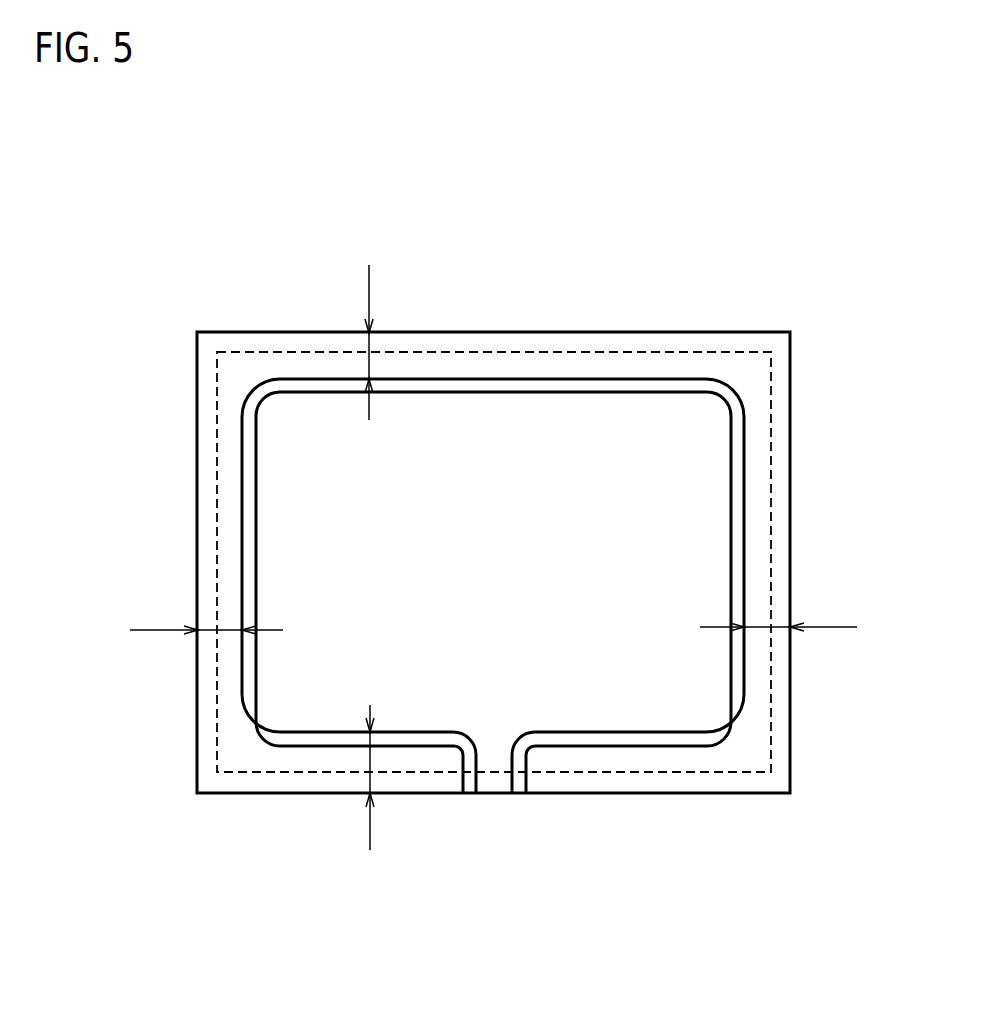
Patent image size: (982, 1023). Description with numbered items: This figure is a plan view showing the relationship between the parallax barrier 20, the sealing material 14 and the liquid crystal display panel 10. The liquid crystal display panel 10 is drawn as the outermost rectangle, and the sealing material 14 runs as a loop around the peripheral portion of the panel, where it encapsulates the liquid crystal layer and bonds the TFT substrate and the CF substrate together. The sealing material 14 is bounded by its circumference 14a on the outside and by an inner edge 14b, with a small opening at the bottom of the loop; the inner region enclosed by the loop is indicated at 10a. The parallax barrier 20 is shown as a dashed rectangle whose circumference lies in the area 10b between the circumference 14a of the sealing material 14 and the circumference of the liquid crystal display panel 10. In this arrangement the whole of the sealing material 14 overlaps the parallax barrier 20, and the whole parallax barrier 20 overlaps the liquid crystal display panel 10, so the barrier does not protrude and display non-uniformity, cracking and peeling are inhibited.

The liquid crystal display panel 10 is at (790, 733).
The inner region of substrate 10a is at (598, 695).
The area 10b is at (369, 292).
The sealing material 14 is at (557, 538).
The circumference of the sealing material 14a is at (744, 490).
The inner coil turn 14b is at (732, 529).
The parallax barrier 20 is at (770, 432).